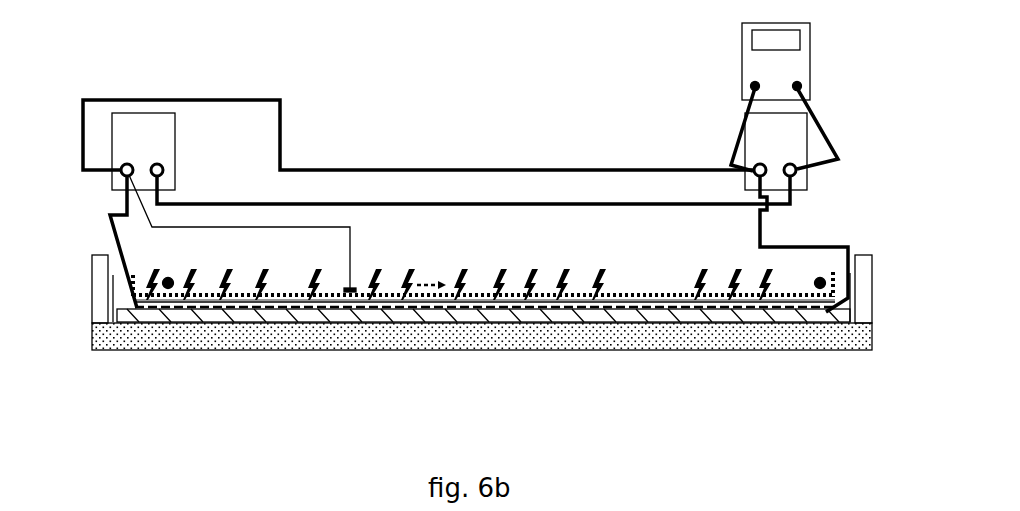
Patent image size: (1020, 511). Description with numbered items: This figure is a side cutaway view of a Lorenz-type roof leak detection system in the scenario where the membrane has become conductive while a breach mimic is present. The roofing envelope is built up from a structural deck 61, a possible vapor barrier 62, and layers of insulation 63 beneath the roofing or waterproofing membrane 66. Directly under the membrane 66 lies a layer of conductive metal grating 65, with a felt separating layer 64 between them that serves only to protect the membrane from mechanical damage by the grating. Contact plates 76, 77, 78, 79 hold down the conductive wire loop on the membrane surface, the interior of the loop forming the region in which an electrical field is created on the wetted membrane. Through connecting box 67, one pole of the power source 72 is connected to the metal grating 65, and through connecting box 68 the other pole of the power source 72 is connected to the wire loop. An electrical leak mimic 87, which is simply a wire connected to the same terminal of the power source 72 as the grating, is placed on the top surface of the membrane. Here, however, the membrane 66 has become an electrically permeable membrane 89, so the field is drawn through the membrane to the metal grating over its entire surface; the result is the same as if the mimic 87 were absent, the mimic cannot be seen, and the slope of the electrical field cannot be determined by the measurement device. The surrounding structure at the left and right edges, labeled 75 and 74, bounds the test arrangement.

The structural deck 61 is at (140, 350).
The vapor barrier 62 is at (195, 323).
The layers of insulation 63 is at (247, 317).
The felt separating layer 64 is at (388, 308).
The conductive metal grating 65 is at (317, 310).
The roofing or waterproofing membrane 66 is at (447, 308).
The connecting box 67 is at (745, 150).
The connecting box 68 is at (177, 128).
The power source 72 is at (742, 57).
The right wall 74 is at (822, 307).
The left wall 75 is at (140, 310).
The contact plate 76 is at (172, 278).
The contact plate 77 is at (224, 271).
The contact plate 78 is at (812, 283).
The contact plate 79 is at (762, 264).
The electrical leak mimic 87 is at (353, 237).
The electrically permeable membrane 89 is at (633, 293).